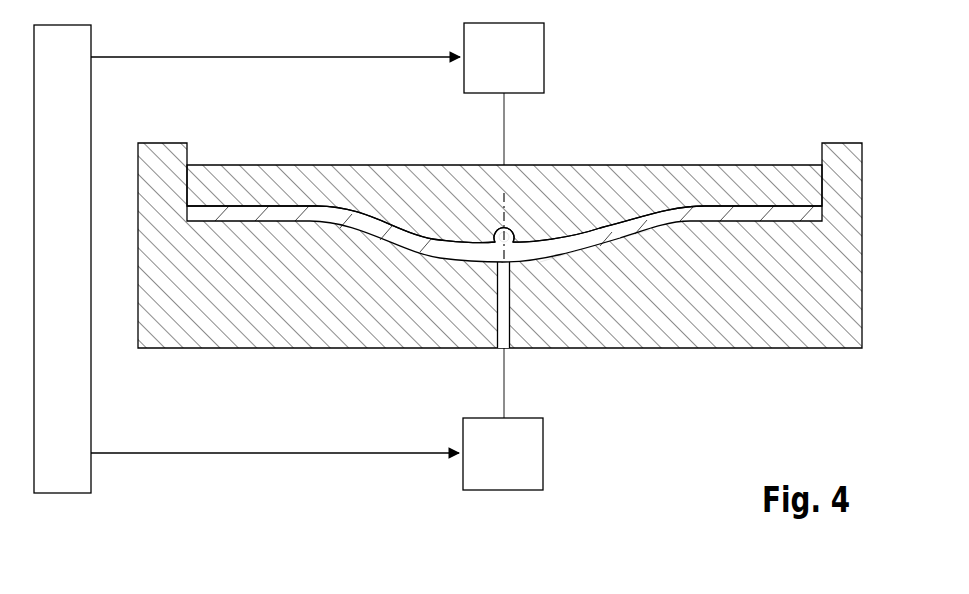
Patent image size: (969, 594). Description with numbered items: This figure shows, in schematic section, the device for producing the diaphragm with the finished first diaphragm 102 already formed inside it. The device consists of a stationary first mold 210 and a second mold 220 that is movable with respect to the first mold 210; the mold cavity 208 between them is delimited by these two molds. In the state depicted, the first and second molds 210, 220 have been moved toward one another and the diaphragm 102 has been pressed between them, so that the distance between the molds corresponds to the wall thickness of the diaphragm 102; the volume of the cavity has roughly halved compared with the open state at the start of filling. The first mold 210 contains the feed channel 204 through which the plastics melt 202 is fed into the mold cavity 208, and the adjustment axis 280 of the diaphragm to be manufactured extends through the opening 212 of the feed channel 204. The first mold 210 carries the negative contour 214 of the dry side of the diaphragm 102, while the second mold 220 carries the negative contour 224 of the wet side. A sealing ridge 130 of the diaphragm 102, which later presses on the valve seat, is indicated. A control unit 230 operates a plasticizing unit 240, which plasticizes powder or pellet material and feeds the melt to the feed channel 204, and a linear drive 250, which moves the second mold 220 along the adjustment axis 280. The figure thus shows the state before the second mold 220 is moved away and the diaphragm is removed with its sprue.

The first diaphragm 102 is at (606, 240).
The sealing ridge 130 is at (509, 232).
The plastics melt 202 is at (498, 303).
The feed channel 204 is at (509, 317).
The mold cavity 208 is at (347, 220).
The first mold 210 is at (722, 312).
The opening 212 is at (497, 256).
The negative contour of the dry side 214 is at (232, 218).
The second mold 220 is at (745, 172).
The negative contour of the wet side 224 is at (264, 211).
The control unit 230 is at (247, 259).
The plasticizing unit 240 is at (503, 419).
The linear drive 250 is at (504, 94).
The adjustment axis 280 is at (527, 233).